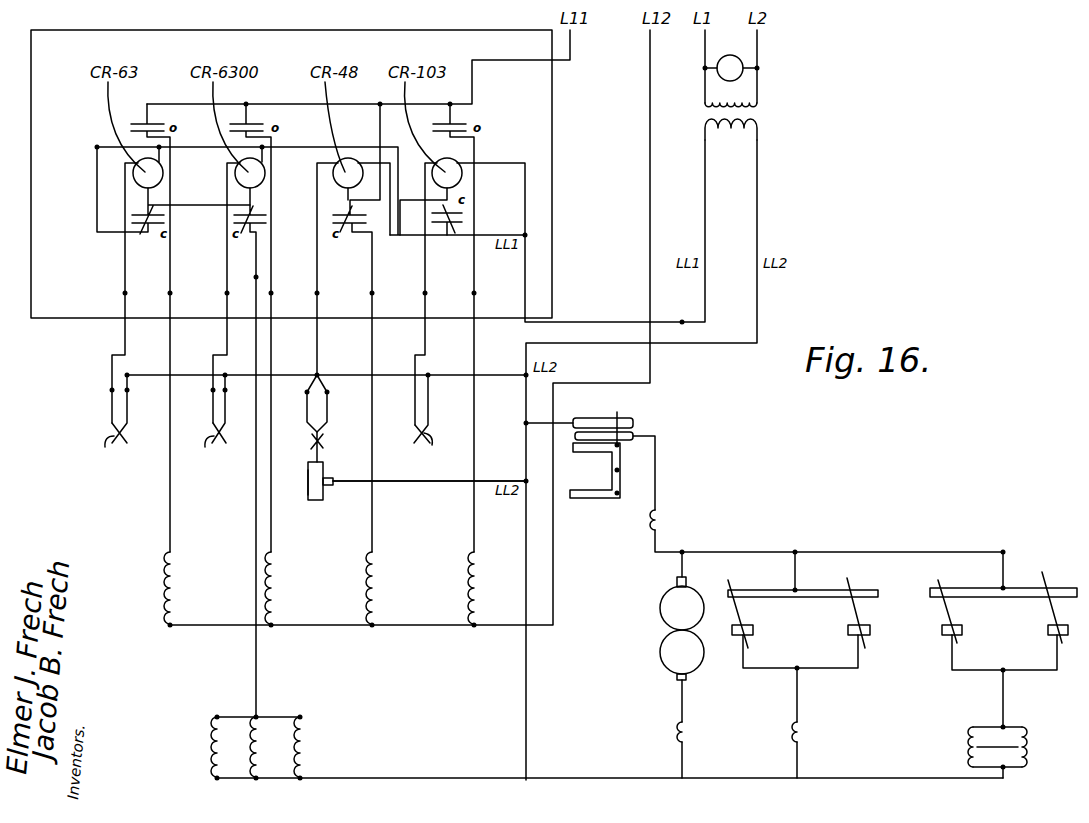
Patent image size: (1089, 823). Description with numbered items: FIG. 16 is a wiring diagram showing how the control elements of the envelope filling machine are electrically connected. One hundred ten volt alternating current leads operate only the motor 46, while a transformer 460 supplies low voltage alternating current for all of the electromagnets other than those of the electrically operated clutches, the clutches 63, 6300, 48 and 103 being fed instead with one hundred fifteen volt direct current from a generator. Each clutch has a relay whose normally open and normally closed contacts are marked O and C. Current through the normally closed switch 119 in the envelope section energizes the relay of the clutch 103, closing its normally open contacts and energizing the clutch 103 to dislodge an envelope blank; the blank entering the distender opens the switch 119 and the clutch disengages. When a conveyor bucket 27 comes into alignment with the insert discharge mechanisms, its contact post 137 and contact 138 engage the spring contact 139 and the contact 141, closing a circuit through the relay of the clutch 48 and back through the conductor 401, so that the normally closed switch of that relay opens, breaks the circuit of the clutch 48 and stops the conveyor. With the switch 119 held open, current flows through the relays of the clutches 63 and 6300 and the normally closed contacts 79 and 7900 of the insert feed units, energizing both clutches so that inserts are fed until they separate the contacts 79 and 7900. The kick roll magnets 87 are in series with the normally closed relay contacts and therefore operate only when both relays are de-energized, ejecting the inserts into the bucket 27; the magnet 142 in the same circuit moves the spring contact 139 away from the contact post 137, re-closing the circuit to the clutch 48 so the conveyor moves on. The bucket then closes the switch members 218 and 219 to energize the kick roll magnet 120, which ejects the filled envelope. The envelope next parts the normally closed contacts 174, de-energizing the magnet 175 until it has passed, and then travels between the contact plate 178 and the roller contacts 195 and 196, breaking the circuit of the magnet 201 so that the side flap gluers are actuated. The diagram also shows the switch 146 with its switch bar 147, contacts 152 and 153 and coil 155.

The motor 46 is at (742, 63).
The transformer 460 is at (745, 114).
The normally closed contacts 79 is at (110, 424).
The normally closed contacts 7900 is at (214, 423).
The spring contact 139 is at (305, 418).
The contact post 137 is at (317, 455).
The contact 138 is at (323, 476).
The contact 141 is at (333, 484).
The bucket 27 is at (602, 500).
The normally closed switch 119 is at (439, 414).
The conductor 401 is at (446, 485).
The switch member 218 is at (627, 421).
The switch member 219 is at (636, 434).
The kick roll magnet 120 is at (650, 530).
The clutch 63 is at (168, 585).
The clutch 6300 is at (275, 580).
The clutch 48 is at (378, 580).
The clutch 103 is at (477, 578).
The magnet 142 is at (215, 744).
The kick roll magnet 87 is at (298, 742).
The normally closed contacts 174 is at (662, 646).
The magnet 175 is at (688, 734).
The switch bar 147 is at (813, 590).
The contact 152 is at (755, 627).
The contact 153 is at (850, 627).
The switch 146 is at (800, 652).
The coil 155 is at (801, 737).
The contact plate 178 is at (1020, 590).
The roller contact 195 is at (965, 627).
The roller contact 196 is at (1048, 630).
The magnet 201 is at (972, 750).